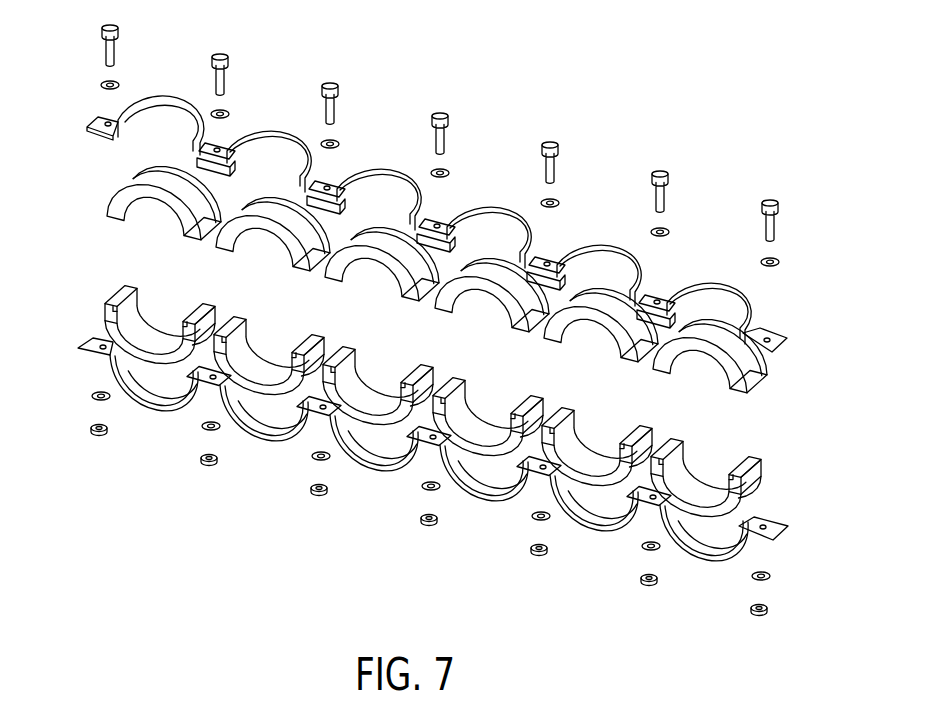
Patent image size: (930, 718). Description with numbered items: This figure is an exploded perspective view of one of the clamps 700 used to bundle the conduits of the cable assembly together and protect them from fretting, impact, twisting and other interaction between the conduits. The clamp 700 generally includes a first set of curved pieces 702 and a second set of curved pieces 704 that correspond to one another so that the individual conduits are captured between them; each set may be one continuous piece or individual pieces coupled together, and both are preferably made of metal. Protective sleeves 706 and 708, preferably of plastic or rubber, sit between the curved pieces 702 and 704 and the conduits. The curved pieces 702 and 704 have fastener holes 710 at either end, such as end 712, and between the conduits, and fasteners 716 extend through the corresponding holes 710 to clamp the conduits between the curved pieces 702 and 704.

The clamp 700 is at (768, 144).
The first set of curved pieces 702 is at (80, 152).
The second set of curved pieces 704 is at (805, 555).
The protective sleeve 706 is at (170, 243).
The protective sleeve 708 is at (653, 432).
The fastener hole 710 is at (228, 146).
The end 712 is at (96, 120).
The fastener 716 is at (440, 110).